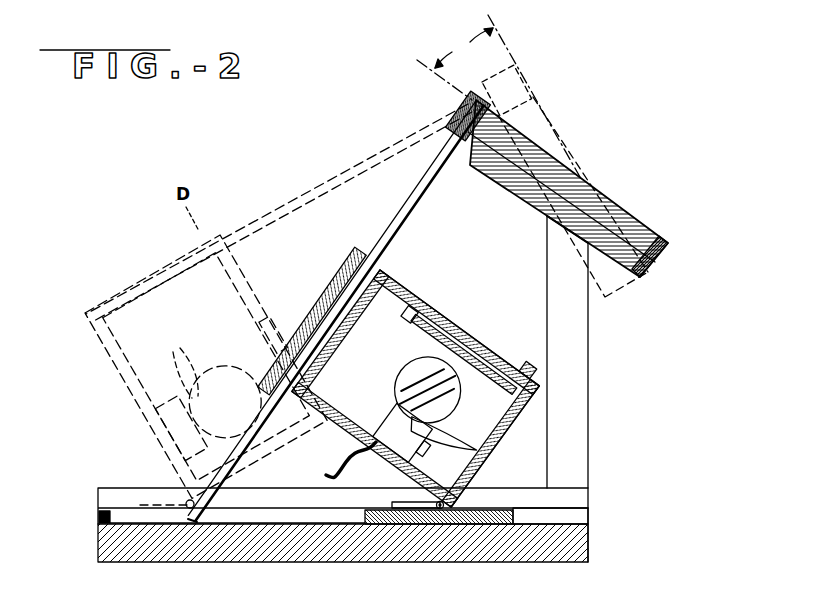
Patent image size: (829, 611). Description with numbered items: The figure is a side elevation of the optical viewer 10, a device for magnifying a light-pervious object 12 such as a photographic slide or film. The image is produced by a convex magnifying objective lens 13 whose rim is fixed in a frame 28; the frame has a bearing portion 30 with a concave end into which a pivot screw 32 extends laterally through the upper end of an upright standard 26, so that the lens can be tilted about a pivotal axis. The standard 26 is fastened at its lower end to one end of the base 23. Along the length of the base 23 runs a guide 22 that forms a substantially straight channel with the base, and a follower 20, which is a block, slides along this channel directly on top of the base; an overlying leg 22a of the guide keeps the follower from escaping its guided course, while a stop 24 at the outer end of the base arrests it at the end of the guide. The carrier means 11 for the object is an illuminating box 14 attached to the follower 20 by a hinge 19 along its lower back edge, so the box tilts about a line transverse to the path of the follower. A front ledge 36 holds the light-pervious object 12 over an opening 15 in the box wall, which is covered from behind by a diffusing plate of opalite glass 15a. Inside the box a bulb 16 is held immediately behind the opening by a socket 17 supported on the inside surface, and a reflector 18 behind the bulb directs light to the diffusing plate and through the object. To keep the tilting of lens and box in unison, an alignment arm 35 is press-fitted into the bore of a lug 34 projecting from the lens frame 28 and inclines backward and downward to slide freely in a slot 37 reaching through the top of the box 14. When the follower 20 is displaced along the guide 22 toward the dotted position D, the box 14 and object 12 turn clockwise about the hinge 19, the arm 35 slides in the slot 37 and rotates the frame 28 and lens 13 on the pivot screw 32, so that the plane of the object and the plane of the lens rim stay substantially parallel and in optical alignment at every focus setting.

The optical viewer 10 is at (650, 111).
The carrier means 11 is at (150, 270).
The light-pervious object 12 is at (483, 325).
The objective lens 13 is at (550, 117).
The illuminating box 14 is at (512, 439).
The opening 15 is at (470, 303).
The plate of opalite glass 15a is at (440, 334).
The bulb 16 is at (403, 372).
The socket 17 is at (428, 442).
The reflector 18 is at (478, 425).
The hinge 19 is at (470, 498).
The follower 20 is at (471, 526).
The guide 22 is at (580, 518).
The leg 22a is at (122, 493).
The base 23 is at (324, 563).
The stop 24 is at (98, 515).
The standard 26 is at (588, 405).
The frame 28 is at (666, 259).
The bearing portion 30 is at (601, 211).
The pivot screw 32 is at (548, 218).
The lug 34 is at (519, 67).
The alignment arm 35 is at (292, 200).
The front ledge 36 is at (528, 352).
The slot 37 is at (330, 300).